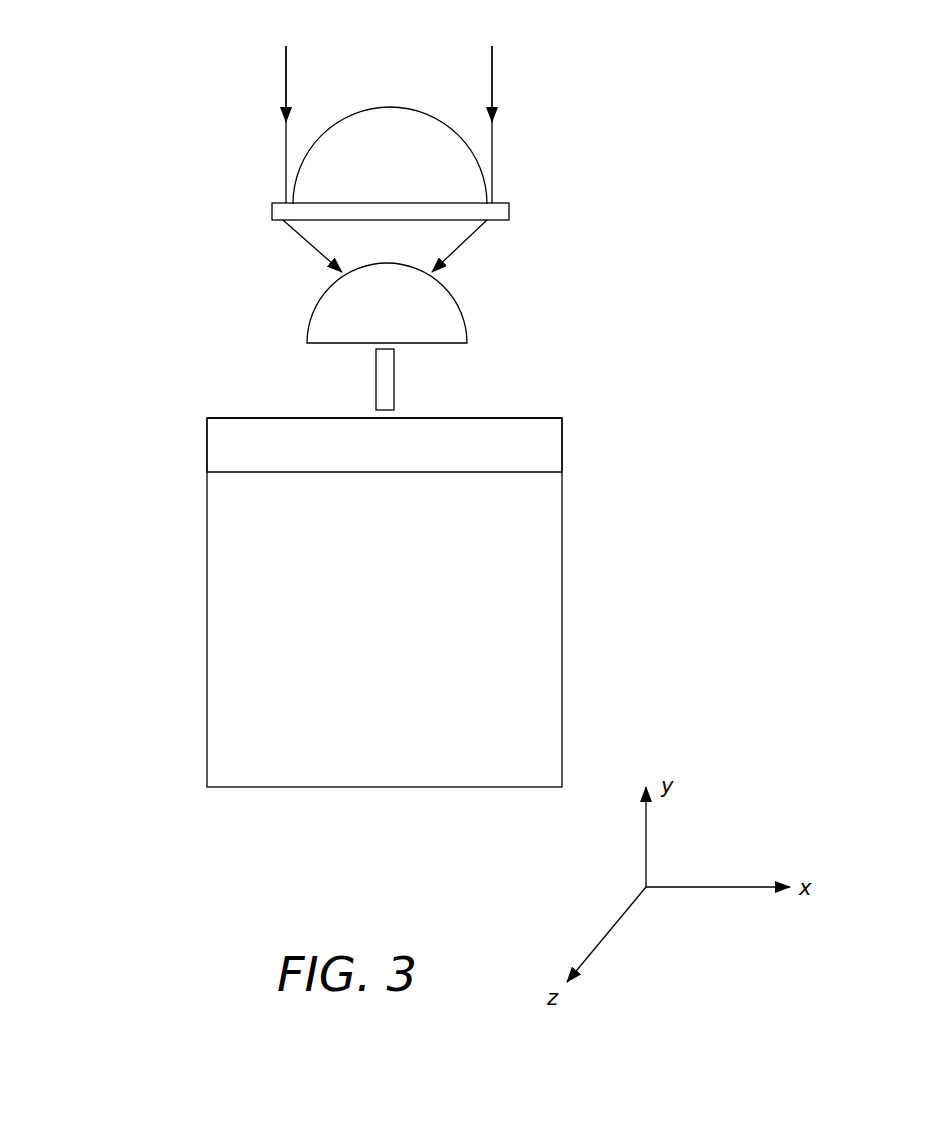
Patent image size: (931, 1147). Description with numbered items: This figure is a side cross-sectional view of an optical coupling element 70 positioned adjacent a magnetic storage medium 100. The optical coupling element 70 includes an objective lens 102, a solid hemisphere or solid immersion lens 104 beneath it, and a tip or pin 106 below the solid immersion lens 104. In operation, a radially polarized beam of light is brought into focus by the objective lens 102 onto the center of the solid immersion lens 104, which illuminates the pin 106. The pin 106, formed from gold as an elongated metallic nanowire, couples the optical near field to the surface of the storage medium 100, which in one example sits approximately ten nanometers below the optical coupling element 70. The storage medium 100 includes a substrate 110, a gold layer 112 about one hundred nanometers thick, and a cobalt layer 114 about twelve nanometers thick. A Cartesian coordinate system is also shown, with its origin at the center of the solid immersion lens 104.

The optical coupling element 70 is at (173, 302).
The objective lens 102 is at (465, 138).
The solid immersion lens 104 is at (460, 298).
The pin 106 is at (394, 380).
The magnetic storage medium 100 is at (175, 557).
The substrate 110 is at (562, 591).
The gold layer 112 is at (207, 443).
The cobalt layer 114 is at (228, 418).